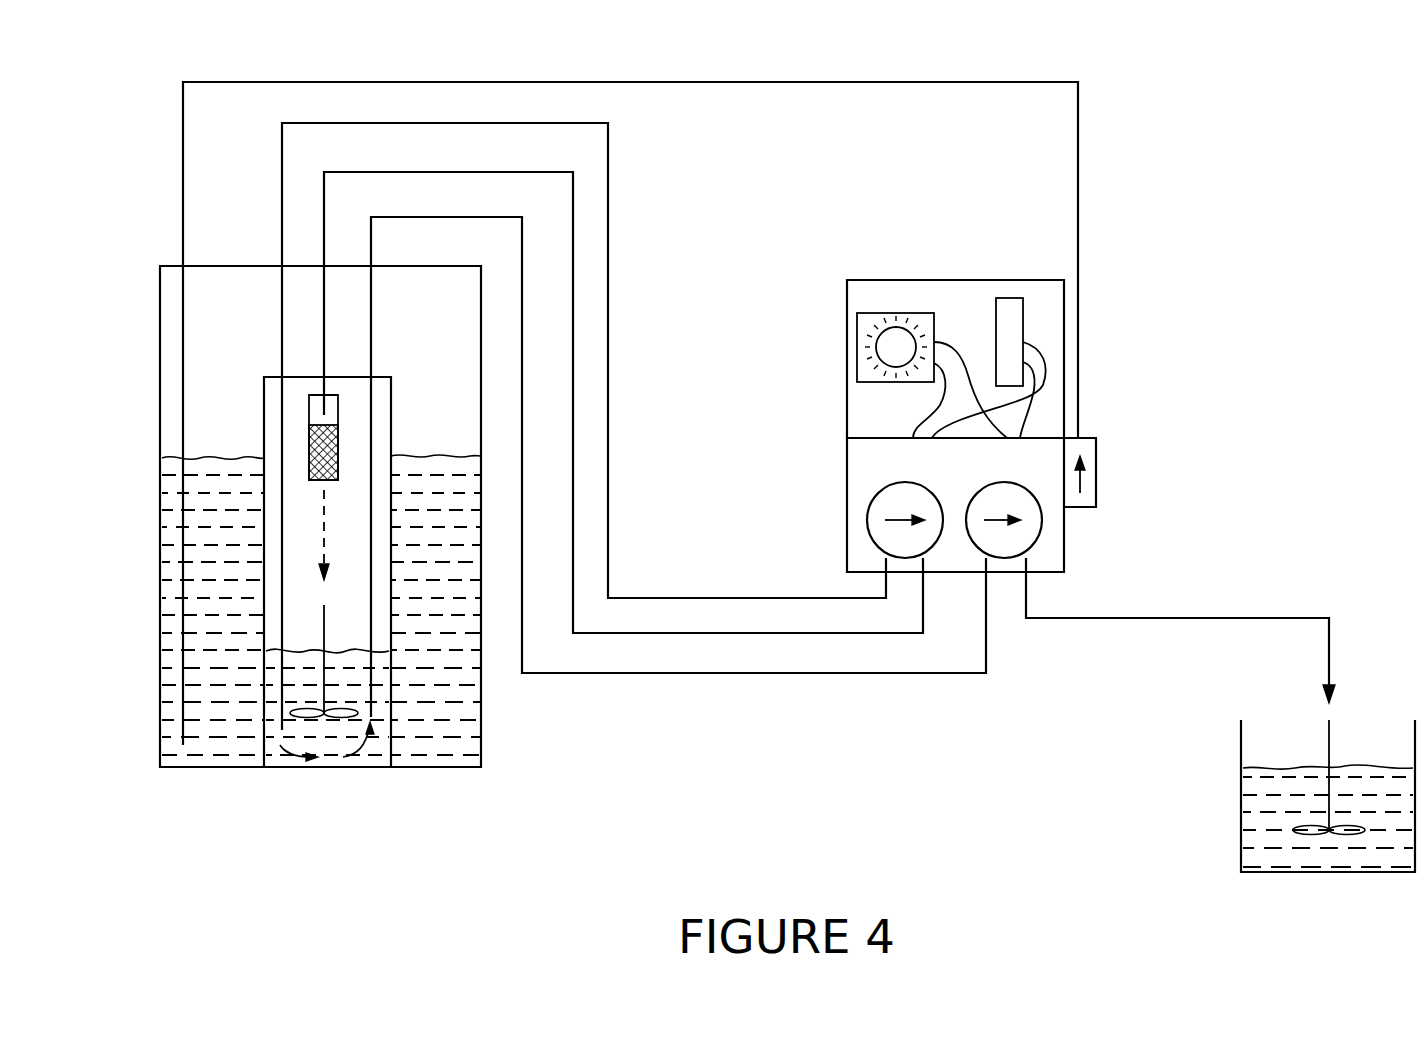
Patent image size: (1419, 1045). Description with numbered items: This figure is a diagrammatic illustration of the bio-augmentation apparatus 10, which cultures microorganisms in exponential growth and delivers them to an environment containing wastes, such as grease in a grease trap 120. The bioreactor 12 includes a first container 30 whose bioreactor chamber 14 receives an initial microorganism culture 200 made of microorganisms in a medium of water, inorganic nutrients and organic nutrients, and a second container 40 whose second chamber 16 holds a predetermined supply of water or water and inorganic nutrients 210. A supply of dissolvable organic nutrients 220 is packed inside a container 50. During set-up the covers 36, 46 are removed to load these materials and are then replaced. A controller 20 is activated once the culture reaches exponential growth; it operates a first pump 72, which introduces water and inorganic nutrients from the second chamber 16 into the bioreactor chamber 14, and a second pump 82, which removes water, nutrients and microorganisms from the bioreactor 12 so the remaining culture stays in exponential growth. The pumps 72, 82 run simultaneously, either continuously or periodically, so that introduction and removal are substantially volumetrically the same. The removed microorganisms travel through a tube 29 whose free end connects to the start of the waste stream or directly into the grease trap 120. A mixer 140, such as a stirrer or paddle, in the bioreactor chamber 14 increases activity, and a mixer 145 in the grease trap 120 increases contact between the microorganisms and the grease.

The bio-augmentation apparatus 10 is at (773, 703).
The bioreactor 12 is at (141, 351).
The bioreactor chamber 14 is at (276, 639).
The second chamber 16 is at (446, 421).
The controller 20 is at (933, 261).
The tube 29 is at (1228, 617).
The first container 30 is at (264, 431).
The cover 36 is at (269, 376).
The second container 40 is at (159, 557).
The cover 46 is at (237, 266).
The container 50 is at (328, 482).
The first pump 72 is at (868, 516).
The second pump 82 is at (1040, 535).
The grease trap 120 is at (1253, 848).
The mixer 140 is at (326, 631).
The mixer 145 is at (1331, 743).
The microorganism culture 200 is at (332, 750).
The water and inorganic nutrients 210 is at (190, 748).
The organic nutrients 220 is at (308, 458).